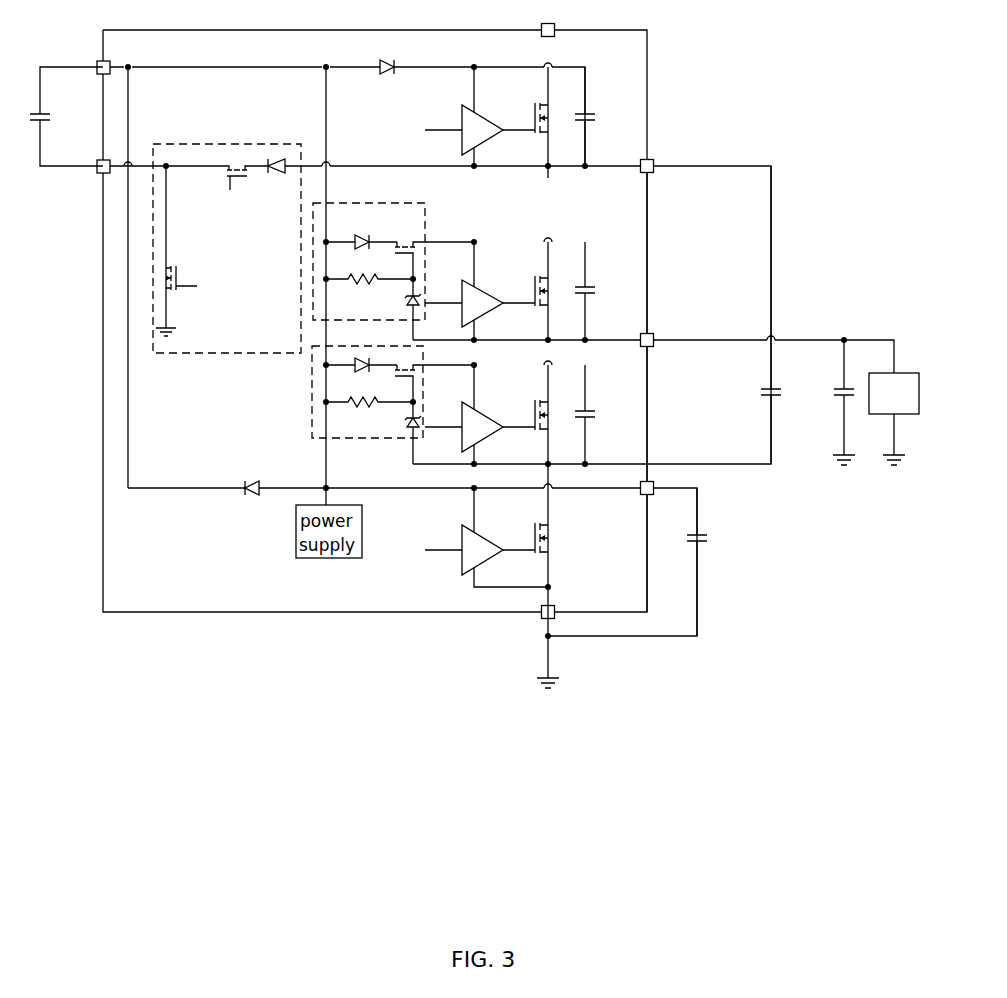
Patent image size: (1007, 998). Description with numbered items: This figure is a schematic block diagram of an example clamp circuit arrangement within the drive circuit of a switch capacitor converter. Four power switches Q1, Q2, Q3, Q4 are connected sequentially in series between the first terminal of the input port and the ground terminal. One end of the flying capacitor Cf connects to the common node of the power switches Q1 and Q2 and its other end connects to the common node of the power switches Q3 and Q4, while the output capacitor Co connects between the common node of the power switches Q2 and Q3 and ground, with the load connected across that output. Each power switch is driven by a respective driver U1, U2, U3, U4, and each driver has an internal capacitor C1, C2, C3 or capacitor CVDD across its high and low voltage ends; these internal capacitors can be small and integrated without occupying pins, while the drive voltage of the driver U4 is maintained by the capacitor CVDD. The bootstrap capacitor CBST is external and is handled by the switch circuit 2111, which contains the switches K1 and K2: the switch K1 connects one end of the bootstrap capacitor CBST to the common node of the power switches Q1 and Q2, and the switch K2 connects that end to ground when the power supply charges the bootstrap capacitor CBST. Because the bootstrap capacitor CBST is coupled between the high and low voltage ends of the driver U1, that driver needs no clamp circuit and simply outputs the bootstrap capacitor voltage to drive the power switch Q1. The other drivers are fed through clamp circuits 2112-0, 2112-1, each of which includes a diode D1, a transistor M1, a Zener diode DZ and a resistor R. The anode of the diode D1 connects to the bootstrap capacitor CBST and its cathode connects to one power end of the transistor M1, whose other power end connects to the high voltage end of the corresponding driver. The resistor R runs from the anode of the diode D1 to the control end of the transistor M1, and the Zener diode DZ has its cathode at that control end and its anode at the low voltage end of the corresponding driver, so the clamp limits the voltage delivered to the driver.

The switch circuit 2111 is at (212, 353).
The clamp circuit 2112-0 is at (425, 222).
The clamp circuit 2112-1 is at (312, 400).
The switch K1 is at (225, 184).
The switch K2 is at (177, 251).
The diode D1 is at (361, 230).
The transistor M1 is at (431, 249).
The resistor R is at (369, 290).
The Zener diode DZ is at (400, 309).
The driver U1 is at (464, 130).
The driver U2 is at (464, 303).
The driver U3 is at (464, 427).
The driver U4 is at (464, 550).
The power switch Q1 is at (525, 122).
The power switch Q2 is at (525, 291).
The power switch Q3 is at (525, 426).
The power switch Q4 is at (525, 562).
The internal capacitor C1 is at (601, 116).
The internal capacitor C2 is at (599, 291).
The internal capacitor C3 is at (599, 414).
The bootstrap capacitor CBST is at (66, 116).
The capacitor CVDD is at (726, 562).
The flying capacitor Cf is at (755, 315).
The output capacitor Co is at (831, 402).
The element load is at (918, 373).